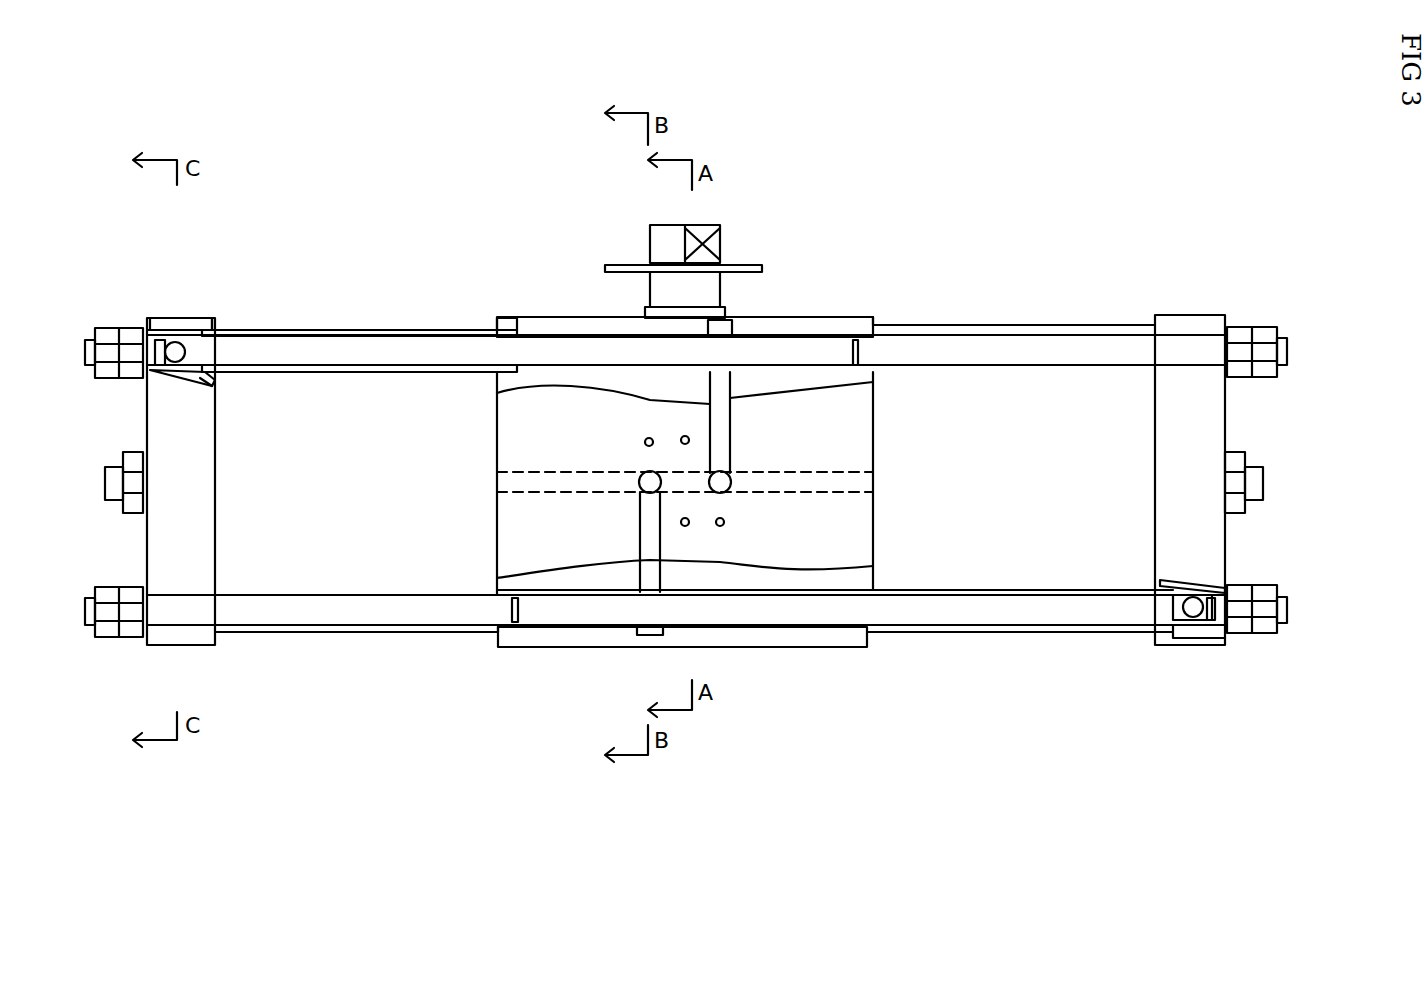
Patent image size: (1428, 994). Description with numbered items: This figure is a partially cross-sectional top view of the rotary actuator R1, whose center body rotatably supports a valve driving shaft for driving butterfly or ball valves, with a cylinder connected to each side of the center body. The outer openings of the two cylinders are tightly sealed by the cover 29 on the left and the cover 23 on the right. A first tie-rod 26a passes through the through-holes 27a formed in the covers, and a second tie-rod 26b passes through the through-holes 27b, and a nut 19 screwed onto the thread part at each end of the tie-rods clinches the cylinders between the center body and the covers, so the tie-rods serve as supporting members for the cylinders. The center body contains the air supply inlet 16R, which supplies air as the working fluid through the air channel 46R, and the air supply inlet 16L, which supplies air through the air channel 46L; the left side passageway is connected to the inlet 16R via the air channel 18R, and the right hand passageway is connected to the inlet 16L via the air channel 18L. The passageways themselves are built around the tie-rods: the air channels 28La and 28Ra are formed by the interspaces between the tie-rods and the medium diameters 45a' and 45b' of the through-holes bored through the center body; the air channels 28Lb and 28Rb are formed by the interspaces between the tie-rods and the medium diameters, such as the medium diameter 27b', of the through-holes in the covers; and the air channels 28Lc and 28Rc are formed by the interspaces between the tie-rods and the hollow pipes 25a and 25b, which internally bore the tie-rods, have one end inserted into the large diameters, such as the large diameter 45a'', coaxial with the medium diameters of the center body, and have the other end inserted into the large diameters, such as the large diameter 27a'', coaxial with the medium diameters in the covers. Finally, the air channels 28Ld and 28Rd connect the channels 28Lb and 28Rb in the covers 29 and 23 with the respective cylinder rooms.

The rotary actuator R1 is at (228, 56).
The nut 19 is at (105, 320).
The cover 23 is at (1155, 525).
The hollow pipe 25a is at (432, 378).
The hollow pipe 25b is at (928, 585).
The first tie-rod 26a is at (362, 350).
The second tie-rod 26b is at (957, 610).
The through-hole 27a is at (684, 336).
The large diameter 27a'' is at (227, 294).
The through-hole 27b is at (696, 611).
The medium diameter 27b' is at (1177, 657).
The air channel 28Ld is at (183, 318).
The air channel 28Lb is at (208, 382).
The air channel 28Lc is at (372, 378).
The air channel 28La is at (555, 378).
The air channel 28Ra is at (782, 590).
The air channel 28Rb is at (1162, 585).
The air channel 28Rc is at (988, 585).
The air channel 28Rd is at (1193, 617).
The cover 29 is at (215, 530).
The medium diameter 45a' is at (685, 371).
The large diameter 45a'' is at (522, 296).
The medium diameter 45b' is at (691, 614).
The air channel 46L is at (548, 490).
The air channel 46R is at (838, 478).
The air supply inlet 16L is at (652, 472).
The air supply inlet 16R is at (712, 492).
The air channel 18L is at (640, 530).
The air channel 18R is at (725, 448).